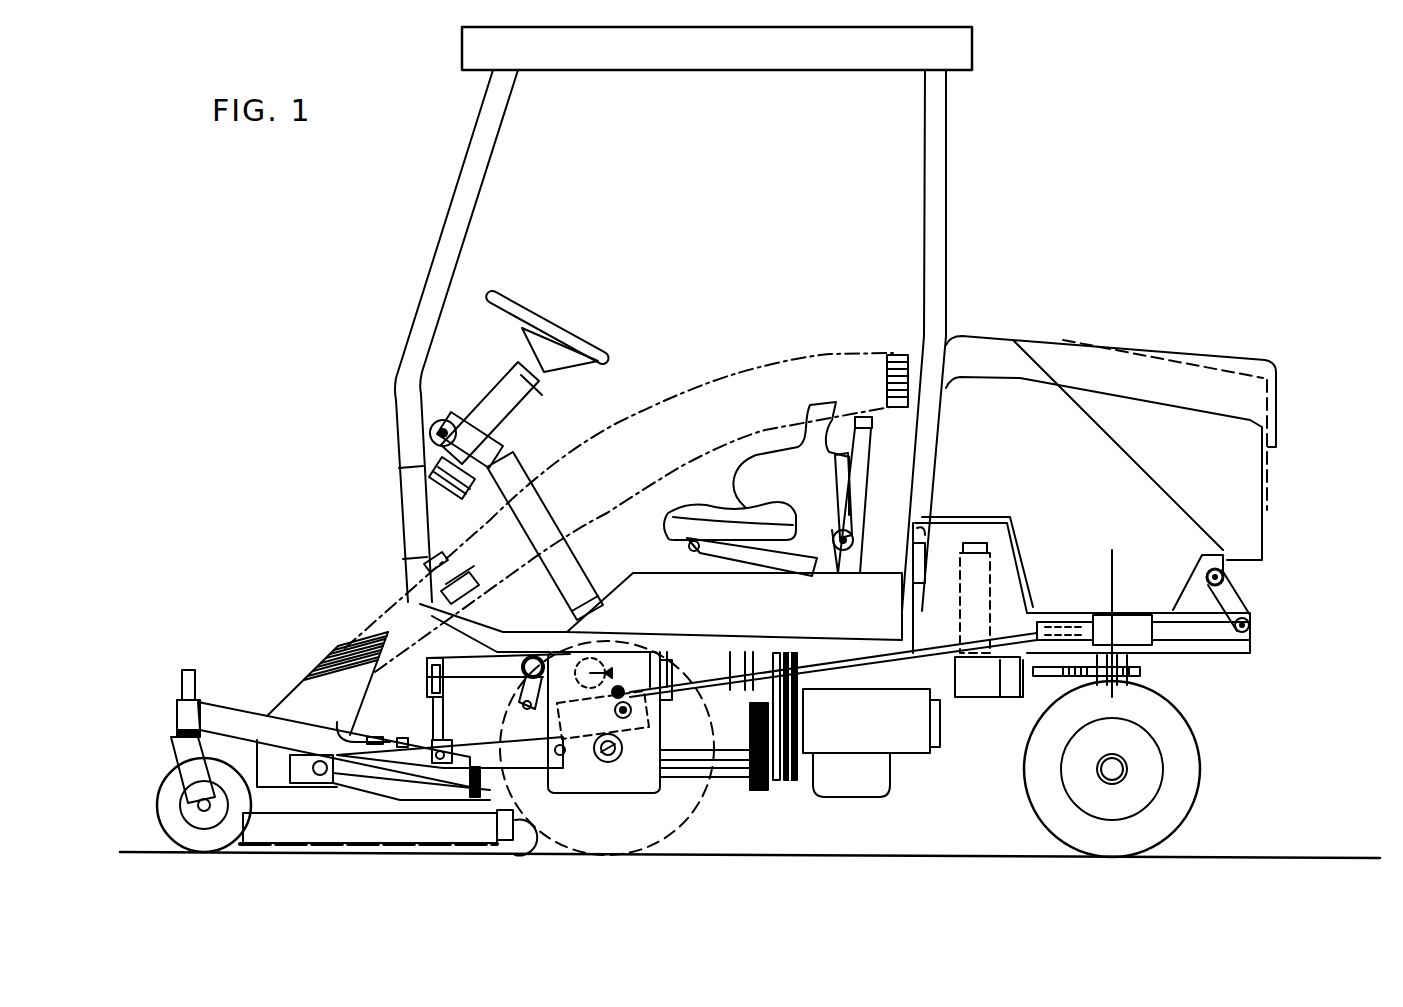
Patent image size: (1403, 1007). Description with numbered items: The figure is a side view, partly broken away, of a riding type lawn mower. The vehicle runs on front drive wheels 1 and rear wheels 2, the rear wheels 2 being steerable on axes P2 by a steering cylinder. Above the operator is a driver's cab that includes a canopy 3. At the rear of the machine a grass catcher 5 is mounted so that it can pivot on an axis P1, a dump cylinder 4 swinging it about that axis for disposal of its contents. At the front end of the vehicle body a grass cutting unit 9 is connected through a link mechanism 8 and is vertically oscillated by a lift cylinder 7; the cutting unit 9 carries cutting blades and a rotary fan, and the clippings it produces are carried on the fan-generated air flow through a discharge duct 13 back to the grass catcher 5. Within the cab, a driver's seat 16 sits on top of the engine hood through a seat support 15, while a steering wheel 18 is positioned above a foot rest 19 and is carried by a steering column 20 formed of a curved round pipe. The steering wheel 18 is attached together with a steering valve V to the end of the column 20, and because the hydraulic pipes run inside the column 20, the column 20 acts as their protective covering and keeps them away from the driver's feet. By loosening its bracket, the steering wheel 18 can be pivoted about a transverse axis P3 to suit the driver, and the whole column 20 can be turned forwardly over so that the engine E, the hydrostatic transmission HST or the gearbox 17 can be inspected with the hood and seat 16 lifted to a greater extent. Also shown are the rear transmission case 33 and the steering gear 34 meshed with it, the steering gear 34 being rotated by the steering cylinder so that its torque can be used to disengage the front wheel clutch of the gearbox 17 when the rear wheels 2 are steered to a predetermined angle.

The front drive wheels 1 is at (700, 810).
The rear wheels 2 is at (1190, 790).
The canopy 3 is at (972, 58).
The dump cylinder 4 is at (1142, 618).
The grass catcher 5 is at (1255, 500).
The lift cylinder 7 is at (633, 757).
The link mechanism 8 is at (398, 682).
The grass cutting unit 9 is at (365, 827).
The discharge duct 13 is at (833, 367).
The seat support 15 is at (855, 485).
The driver's seat 16 is at (752, 455).
The gearbox 17 is at (593, 783).
The steering wheel 18 is at (553, 327).
The foot rest 19 is at (488, 620).
The steering column 20 is at (596, 527).
The rear transmission case 33 is at (1133, 660).
The steering gear 34 is at (1060, 683).
The engine E is at (907, 737).
The steering valve V is at (497, 447).
The axis P1 is at (1225, 578).
The axes P2 is at (1112, 568).
The axis P3 is at (432, 427).
The hydrostatic transmission HST is at (702, 655).